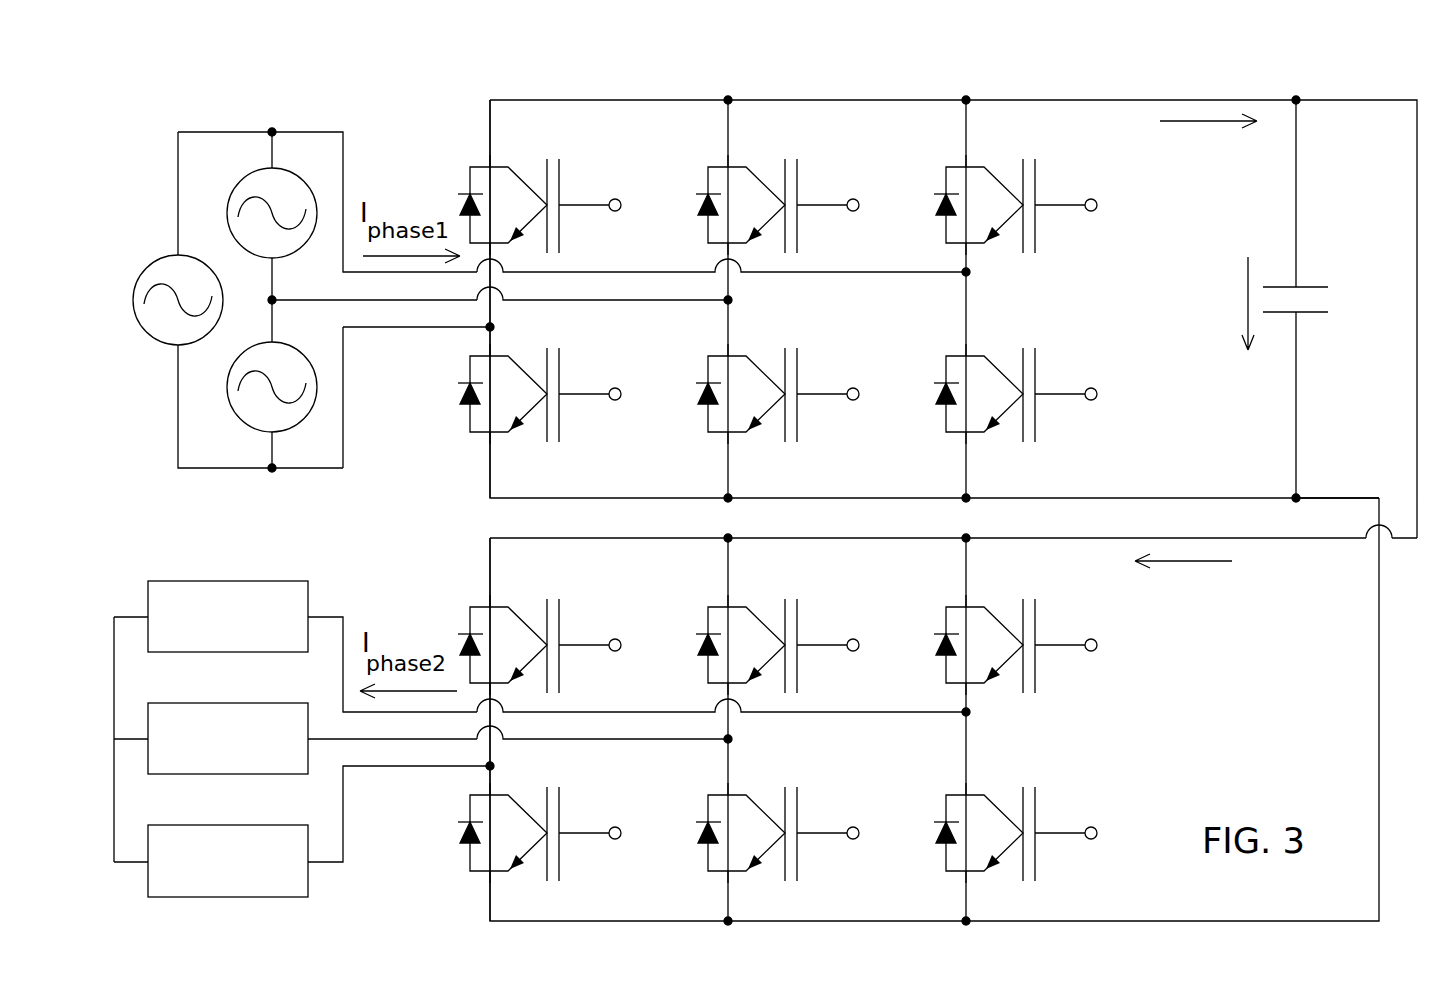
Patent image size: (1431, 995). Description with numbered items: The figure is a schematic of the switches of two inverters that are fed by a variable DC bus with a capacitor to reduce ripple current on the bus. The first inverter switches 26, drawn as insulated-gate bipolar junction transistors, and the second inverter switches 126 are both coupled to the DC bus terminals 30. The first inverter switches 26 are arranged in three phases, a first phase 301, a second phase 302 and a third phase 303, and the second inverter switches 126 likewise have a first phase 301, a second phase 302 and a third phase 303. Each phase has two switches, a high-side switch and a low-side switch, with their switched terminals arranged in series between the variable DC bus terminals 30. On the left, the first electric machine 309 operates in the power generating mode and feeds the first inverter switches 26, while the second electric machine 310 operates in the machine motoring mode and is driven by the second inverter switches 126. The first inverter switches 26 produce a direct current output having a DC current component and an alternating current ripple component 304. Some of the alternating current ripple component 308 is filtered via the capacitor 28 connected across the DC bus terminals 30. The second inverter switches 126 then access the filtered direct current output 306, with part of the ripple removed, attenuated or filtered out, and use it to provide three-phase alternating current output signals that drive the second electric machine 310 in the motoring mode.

The first inverter switches 26 is at (843, 66).
The second inverter switches 126 is at (816, 942).
The capacitor 28 is at (1310, 286).
The DC bus terminals 30 is at (1335, 100).
The first phase 301 is at (496, 78).
The second phase 302 is at (735, 78).
The third phase 303 is at (973, 78).
The alternating current ripple component 304 is at (1210, 120).
The filtered direct current output 306 is at (1180, 560).
The alternating current ripple component 308 is at (1246, 274).
The first electric machine 309 is at (383, 98).
The second electric machine 310 is at (351, 569).